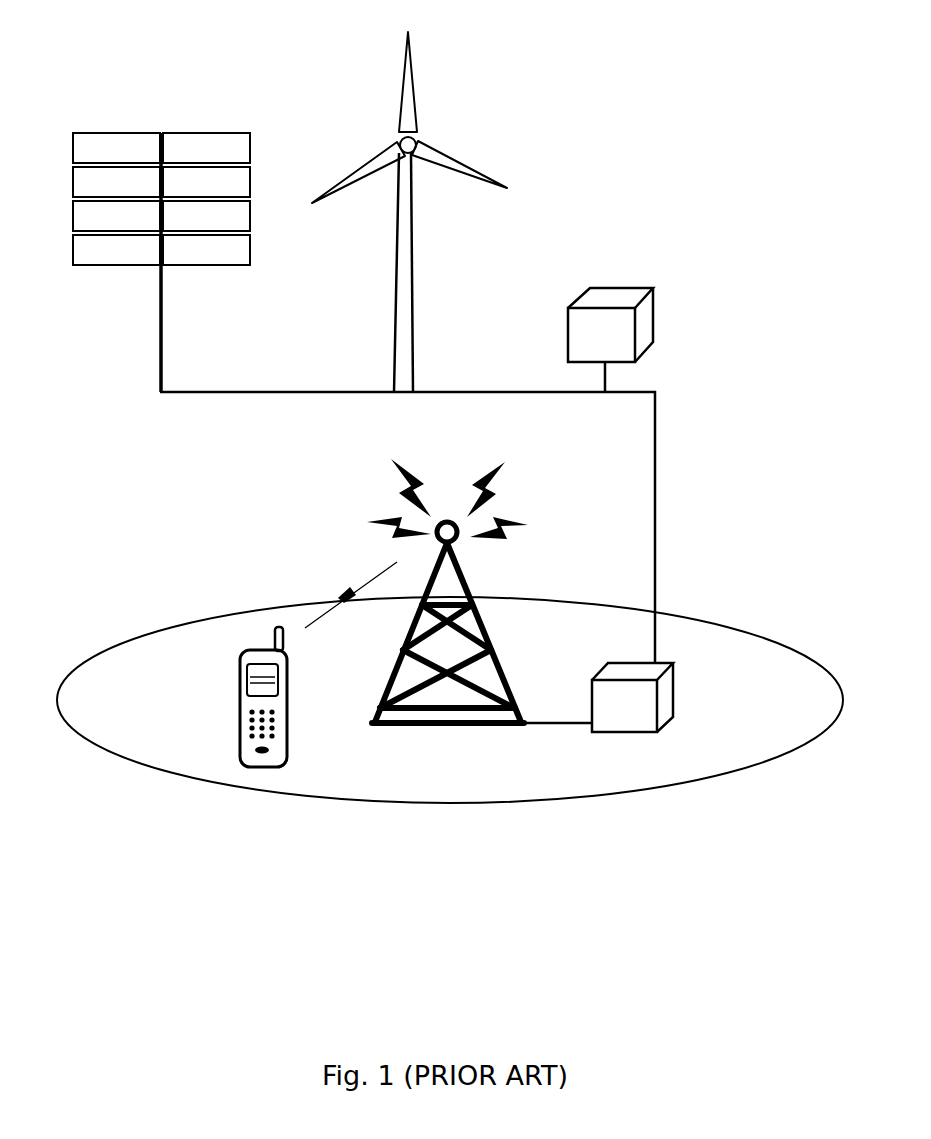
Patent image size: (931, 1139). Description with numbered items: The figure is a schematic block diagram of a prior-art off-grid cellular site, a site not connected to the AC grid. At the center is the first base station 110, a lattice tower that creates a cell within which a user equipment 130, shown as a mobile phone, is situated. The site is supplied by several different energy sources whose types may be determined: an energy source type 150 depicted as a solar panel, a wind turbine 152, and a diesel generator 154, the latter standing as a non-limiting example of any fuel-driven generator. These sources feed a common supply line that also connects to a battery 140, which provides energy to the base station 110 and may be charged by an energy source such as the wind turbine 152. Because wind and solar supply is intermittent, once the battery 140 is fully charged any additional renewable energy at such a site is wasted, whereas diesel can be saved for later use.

The first base station 110 is at (428, 565).
The user equipment 130 is at (288, 752).
The battery 140 is at (663, 717).
The energy source type 150 is at (103, 265).
The wind turbine 152 is at (418, 140).
The diesel generator 154 is at (648, 318).